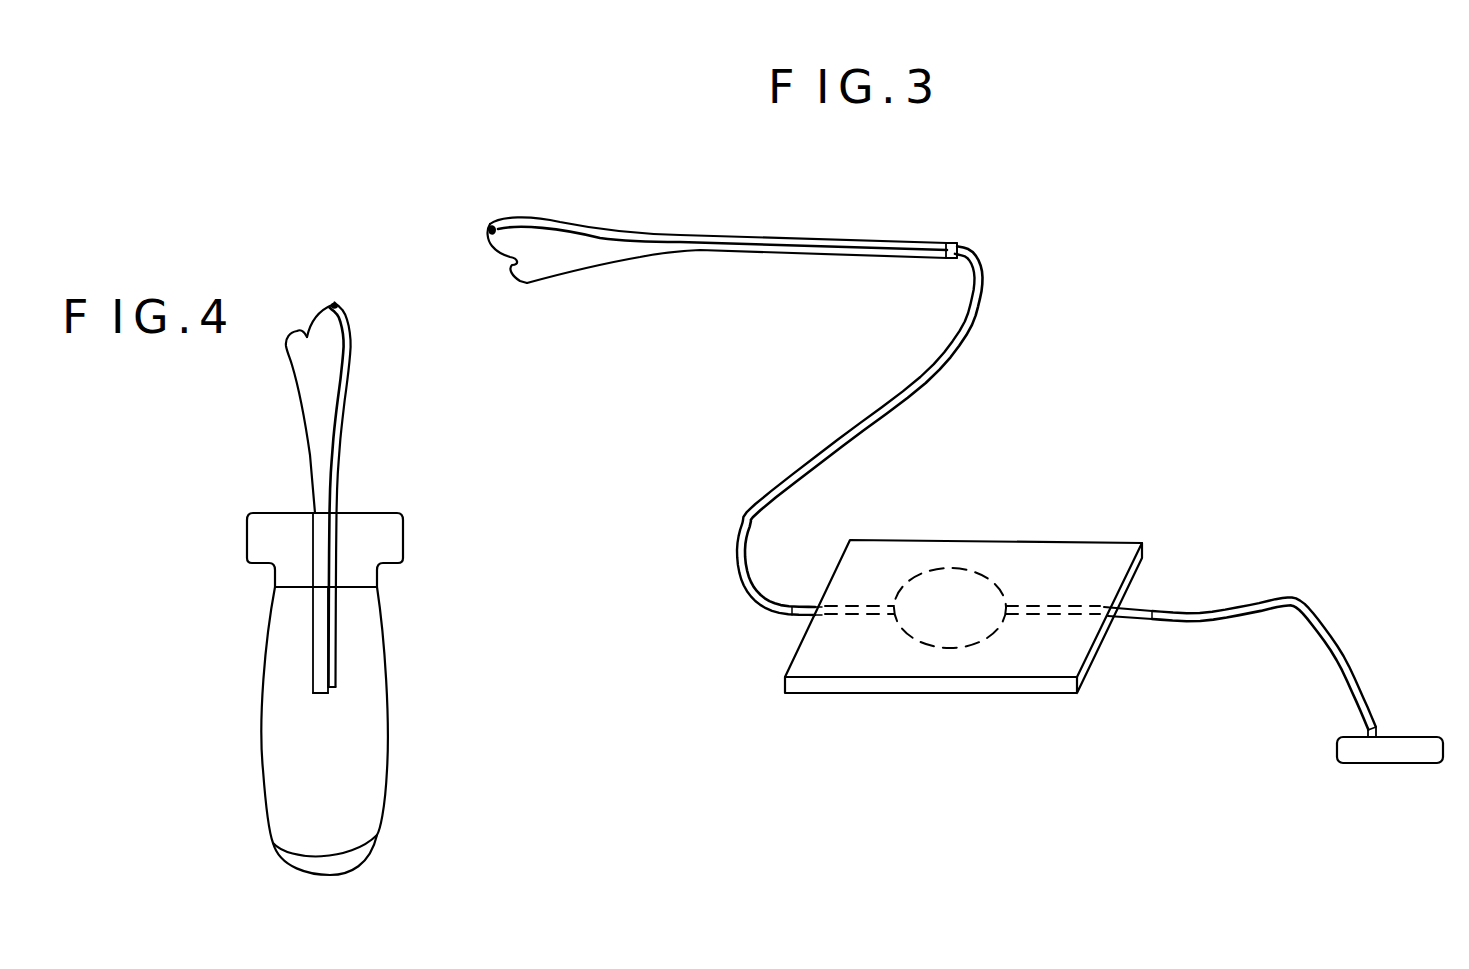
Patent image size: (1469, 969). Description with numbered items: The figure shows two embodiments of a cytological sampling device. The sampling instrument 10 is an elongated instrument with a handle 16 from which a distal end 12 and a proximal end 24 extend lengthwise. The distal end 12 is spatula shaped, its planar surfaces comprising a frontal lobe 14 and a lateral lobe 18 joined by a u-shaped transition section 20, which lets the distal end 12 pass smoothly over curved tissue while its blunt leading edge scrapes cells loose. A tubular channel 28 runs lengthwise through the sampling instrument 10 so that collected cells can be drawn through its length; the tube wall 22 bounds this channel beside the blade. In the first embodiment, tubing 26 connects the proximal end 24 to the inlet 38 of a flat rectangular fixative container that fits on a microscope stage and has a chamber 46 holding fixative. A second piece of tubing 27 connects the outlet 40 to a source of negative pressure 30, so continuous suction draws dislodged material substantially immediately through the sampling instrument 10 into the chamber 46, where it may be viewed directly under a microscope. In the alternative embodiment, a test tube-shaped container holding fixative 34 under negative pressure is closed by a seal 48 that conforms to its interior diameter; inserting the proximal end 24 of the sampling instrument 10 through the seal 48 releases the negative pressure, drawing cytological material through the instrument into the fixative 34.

In FIG. 3, the sampling instrument 10 is at (768, 200).
In FIG. 4, the sampling instrument 10 is at (384, 434).
In FIG. 3, the distal end 12 is at (555, 260).
In FIG. 4, the distal end 12 is at (315, 365).
In FIG. 3, the frontal lobe 14 is at (515, 242).
In FIG. 4, the frontal lobe 14 is at (333, 338).
In FIG. 3, the handle 16 is at (770, 250).
In FIG. 4, the handle 16 is at (324, 500).
In FIG. 3, the lateral lobe 18 is at (528, 280).
In FIG. 4, the lateral lobe 18 is at (290, 345).
In FIG. 3, the transition section 20 is at (510, 262).
In FIG. 4, the transition section 20 is at (298, 336).
In FIG. 4, the tube inner wall 22 is at (343, 395).
In FIG. 3, the proximal end 24 is at (958, 248).
In FIG. 4, the proximal end 24 is at (313, 693).
In FIG. 3, the tubing 26 is at (1328, 626).
In FIG. 3, the second piece of tubing 27 is at (928, 382).
In FIG. 3, the tubular channel 28 is at (490, 228).
In FIG. 4, the tubular channel 28 is at (338, 307).
In FIG. 3, the source of negative pressure 30 is at (1345, 748).
In FIG. 4, the fixative 34 is at (357, 862).
In FIG. 3, the inlet 38 is at (797, 614).
In FIG. 3, the outlet 40 is at (1133, 620).
In FIG. 3, the chamber 46 is at (950, 625).
In FIG. 4, the seal 48 is at (370, 541).